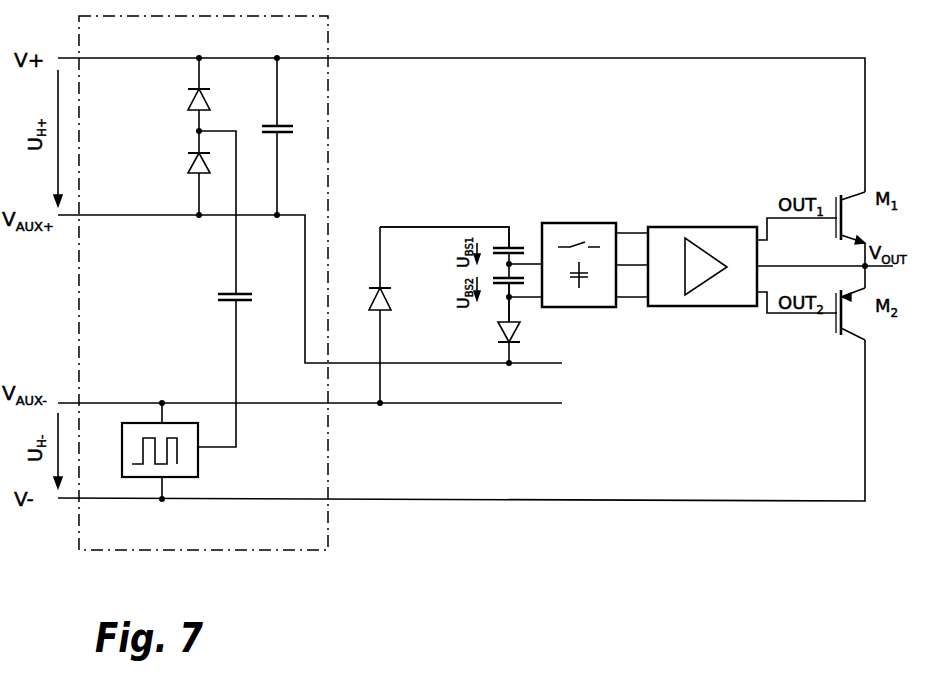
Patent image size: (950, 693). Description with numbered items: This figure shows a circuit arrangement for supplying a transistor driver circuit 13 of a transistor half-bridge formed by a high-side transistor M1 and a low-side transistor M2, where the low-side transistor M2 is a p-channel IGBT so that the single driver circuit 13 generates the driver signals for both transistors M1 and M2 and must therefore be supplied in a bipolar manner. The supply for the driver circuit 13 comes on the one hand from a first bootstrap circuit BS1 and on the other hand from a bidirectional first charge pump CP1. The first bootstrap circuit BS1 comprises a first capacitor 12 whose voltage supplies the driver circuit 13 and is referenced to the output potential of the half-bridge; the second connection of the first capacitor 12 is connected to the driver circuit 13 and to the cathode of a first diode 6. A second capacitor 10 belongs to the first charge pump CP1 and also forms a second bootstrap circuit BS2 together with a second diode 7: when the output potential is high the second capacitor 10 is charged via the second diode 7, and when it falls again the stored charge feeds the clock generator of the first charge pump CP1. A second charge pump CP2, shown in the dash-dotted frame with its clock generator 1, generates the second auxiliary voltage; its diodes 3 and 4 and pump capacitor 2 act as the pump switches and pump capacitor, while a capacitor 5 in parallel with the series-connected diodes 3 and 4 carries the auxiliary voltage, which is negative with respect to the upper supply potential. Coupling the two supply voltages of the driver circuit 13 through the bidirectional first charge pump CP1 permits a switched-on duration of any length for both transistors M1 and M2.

The pulse generator 1 is at (122, 447).
The pump capacitor 2 is at (243, 297).
The diode 3 is at (190, 159).
The diode 4 is at (190, 95).
The capacitor 5 is at (285, 136).
The first diode 6 is at (387, 294).
The second diode 7 is at (517, 337).
The second capacitor 10 is at (502, 292).
The first capacitor 12 is at (502, 261).
The driver circuit 13 is at (703, 307).
The first charge pump CP1 is at (607, 307).
The second charge pump CP2 is at (327, 519).
The first bootstrap circuit BS1 is at (508, 216).
The second bootstrap circuit BS2 is at (476, 319).
The high-side transistor M1 is at (850, 218).
The low-side transistor M2 is at (850, 314).